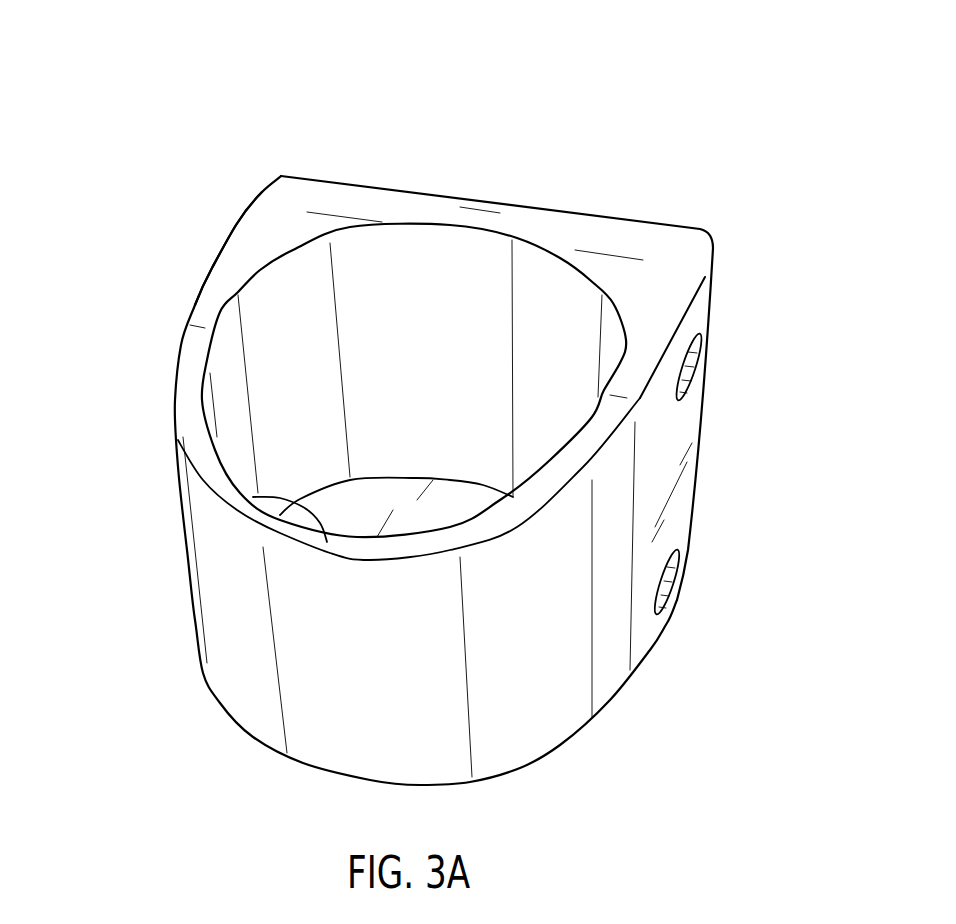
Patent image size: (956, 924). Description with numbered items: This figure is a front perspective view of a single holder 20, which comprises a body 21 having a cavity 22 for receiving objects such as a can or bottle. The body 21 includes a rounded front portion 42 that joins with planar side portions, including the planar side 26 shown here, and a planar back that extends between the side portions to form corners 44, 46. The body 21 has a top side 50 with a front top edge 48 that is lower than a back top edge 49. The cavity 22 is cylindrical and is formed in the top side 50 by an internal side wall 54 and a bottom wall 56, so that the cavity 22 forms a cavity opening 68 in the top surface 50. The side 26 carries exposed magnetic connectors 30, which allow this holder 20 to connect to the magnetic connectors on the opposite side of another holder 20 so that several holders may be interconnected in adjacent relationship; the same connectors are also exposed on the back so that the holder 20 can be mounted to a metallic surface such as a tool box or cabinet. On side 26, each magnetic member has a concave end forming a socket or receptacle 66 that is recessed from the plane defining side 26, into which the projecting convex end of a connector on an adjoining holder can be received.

The holder 20 is at (198, 70).
The body 21 is at (650, 226).
The cavity 22 is at (420, 327).
The side 26 is at (677, 453).
The magnetic connector 30 is at (696, 372).
The rounded front portion 42 is at (338, 670).
The corner 44 is at (287, 177).
The corner 46 is at (713, 240).
The front top edge 48 is at (253, 497).
The back top edge 49 is at (517, 220).
The top side 50 is at (230, 263).
The internal side wall 54 is at (288, 350).
The bottom wall 56 is at (380, 500).
The receptacle 66 is at (693, 367).
The cavity opening 68 is at (208, 350).